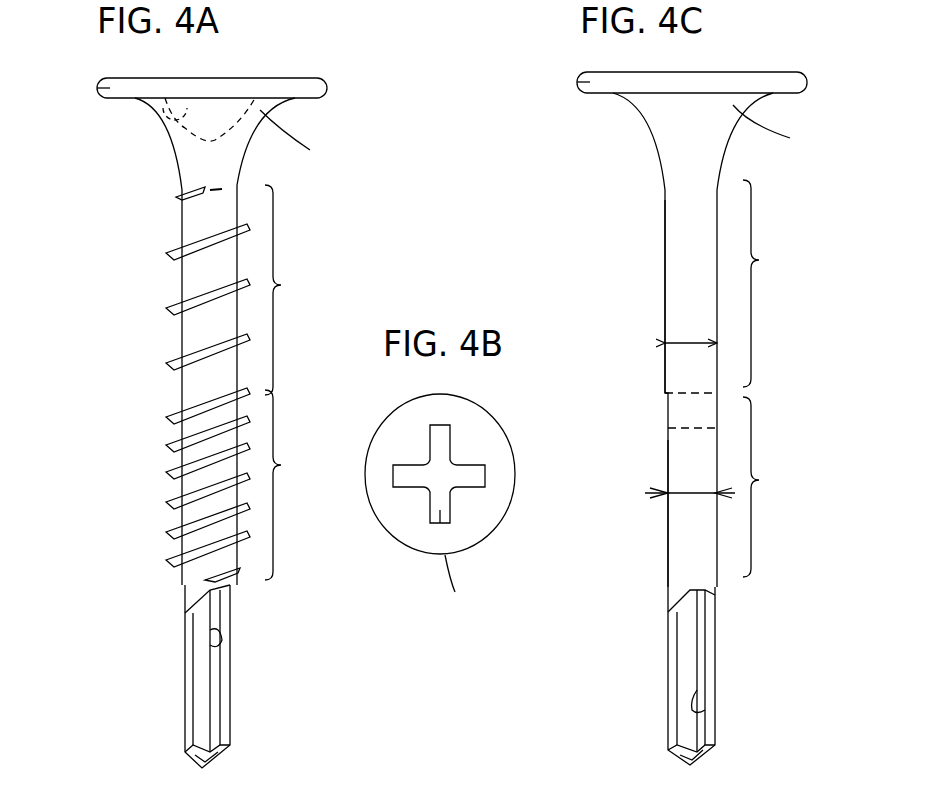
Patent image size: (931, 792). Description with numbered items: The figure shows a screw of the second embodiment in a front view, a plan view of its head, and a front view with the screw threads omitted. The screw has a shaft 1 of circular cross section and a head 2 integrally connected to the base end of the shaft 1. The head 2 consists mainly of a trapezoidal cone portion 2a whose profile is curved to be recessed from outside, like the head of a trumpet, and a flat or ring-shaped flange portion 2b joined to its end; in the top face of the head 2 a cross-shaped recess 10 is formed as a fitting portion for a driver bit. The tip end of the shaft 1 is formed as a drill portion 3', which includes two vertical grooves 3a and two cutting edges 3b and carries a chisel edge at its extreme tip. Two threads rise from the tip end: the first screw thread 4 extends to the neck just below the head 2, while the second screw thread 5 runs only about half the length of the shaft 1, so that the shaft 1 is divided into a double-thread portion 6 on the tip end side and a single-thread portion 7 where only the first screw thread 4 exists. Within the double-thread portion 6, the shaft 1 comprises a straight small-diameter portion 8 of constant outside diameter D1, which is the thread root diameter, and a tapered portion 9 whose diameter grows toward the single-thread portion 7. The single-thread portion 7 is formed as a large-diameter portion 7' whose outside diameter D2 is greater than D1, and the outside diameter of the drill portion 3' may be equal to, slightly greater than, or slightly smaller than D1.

In FIG. 4A, the shaft 1 is at (158, 392).
In FIG. 4C, the shaft 1 is at (640, 293).
In FIG. 4A, the head 2 is at (290, 75).
In FIG. 4B, the head 2 is at (492, 540).
In FIG. 4C, the head 2 is at (770, 70).
In FIG. 4A, the trapezoidal cone portion 2a is at (299, 139).
In FIG. 4C, the trapezoidal cone portion 2a is at (779, 131).
In FIG. 4A, the flange portion 2b is at (105, 86).
In FIG. 4B, the flange portion 2b is at (456, 590).
In FIG. 4C, the flange portion 2b is at (583, 83).
In FIG. 4A, the cross-shaped recess 10 is at (160, 118).
In FIG. 4B, the cross-shaped recess 10 is at (440, 523).
In FIG. 4A, the single-thread portion 7 is at (286, 290).
In FIG. 4C, the single-thread portion 7 is at (761, 283).
In FIG. 4A, the large-diameter portion 7' is at (169, 297).
In FIG. 4C, the large-diameter portion 7' is at (641, 296).
In FIG. 4A, the first screw thread 4 is at (195, 355).
In FIG. 4A, the second screw thread 5 is at (182, 500).
In FIG. 4A, the double-thread portion 6 is at (286, 485).
In FIG. 4C, the double-thread portion 6 is at (761, 487).
In FIG. 4A, the small-diameter portion 8 is at (222, 497).
In FIG. 4C, the small-diameter portion 8 is at (680, 565).
In FIG. 4C, the tapered portion 9 is at (665, 405).
In FIG. 4C, the outside diameter of small-diameter portion D1 is at (690, 493).
In FIG. 4C, the outside diameter of large-diameter portion D2 is at (693, 343).
In FIG. 4A, the drill portion 3' is at (238, 676).
In FIG. 4C, the drill portion 3' is at (724, 676).
In FIG. 4A, the vertical groove 3a is at (222, 650).
In FIG. 4C, the vertical groove 3a is at (700, 712).
In FIG. 4A, the cutting edge 3b is at (228, 755).
In FIG. 4C, the cutting edge 3b is at (715, 750).